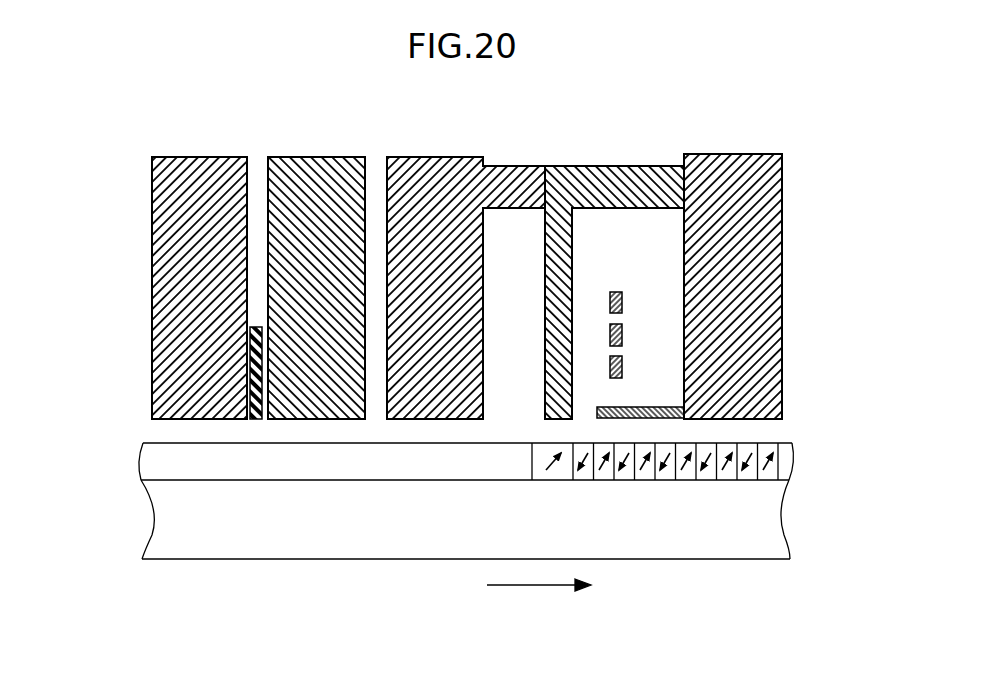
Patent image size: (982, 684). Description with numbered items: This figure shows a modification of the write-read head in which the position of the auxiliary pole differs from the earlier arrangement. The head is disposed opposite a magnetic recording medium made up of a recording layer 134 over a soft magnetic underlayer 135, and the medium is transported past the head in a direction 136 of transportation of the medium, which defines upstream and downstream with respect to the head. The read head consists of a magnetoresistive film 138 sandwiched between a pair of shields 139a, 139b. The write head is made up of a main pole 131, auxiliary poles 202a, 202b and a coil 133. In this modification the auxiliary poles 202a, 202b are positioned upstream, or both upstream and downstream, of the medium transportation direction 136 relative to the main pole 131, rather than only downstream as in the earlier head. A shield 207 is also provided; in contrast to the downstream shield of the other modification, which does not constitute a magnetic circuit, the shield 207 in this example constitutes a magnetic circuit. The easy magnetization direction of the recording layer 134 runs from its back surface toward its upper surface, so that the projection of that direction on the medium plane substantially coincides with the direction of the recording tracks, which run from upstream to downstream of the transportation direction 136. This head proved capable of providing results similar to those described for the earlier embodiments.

The shield 139a is at (175, 243).
The shield 139b is at (318, 222).
The magnetoresistive film 138 is at (247, 350).
The auxiliary pole 202b is at (448, 195).
The main pole 131 is at (557, 240).
The auxiliary pole 202a is at (783, 282).
The coil 133 is at (622, 300).
The shield 207 is at (645, 403).
The recording layer 134 is at (158, 460).
The soft magnetic underlayer 135 is at (195, 528).
The direction of transportation of the medium 136 is at (537, 588).